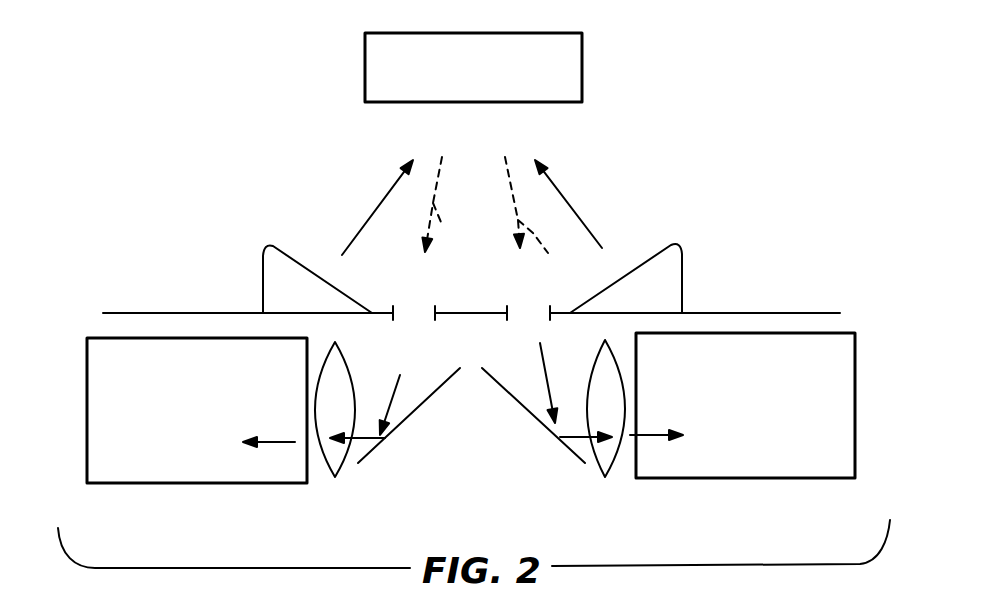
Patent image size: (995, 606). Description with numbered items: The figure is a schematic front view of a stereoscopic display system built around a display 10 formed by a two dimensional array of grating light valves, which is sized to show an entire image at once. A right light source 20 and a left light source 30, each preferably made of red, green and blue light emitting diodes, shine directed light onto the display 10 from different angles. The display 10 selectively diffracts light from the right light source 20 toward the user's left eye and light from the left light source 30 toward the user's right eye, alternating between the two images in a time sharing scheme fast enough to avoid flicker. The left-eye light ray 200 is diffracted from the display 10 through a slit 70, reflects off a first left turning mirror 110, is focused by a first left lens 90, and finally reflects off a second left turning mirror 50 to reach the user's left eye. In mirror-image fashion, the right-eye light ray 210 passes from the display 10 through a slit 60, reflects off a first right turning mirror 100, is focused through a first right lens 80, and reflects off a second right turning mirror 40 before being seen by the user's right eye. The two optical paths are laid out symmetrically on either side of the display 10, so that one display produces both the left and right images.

The display 10 is at (582, 46).
The right light source 20 is at (684, 278).
The left light source 30 is at (265, 282).
The second right turning mirror 40 is at (855, 352).
The second left turning mirror 50 is at (87, 350).
The slit 60 is at (673, 299).
The slit 70 is at (305, 300).
The first right lens 80 is at (600, 465).
The first left lens 90 is at (342, 465).
The first right turning mirror 100 is at (518, 403).
The first left turning mirror 110 is at (436, 390).
The light ray 200 is at (572, 210).
The light ray 210 is at (370, 213).